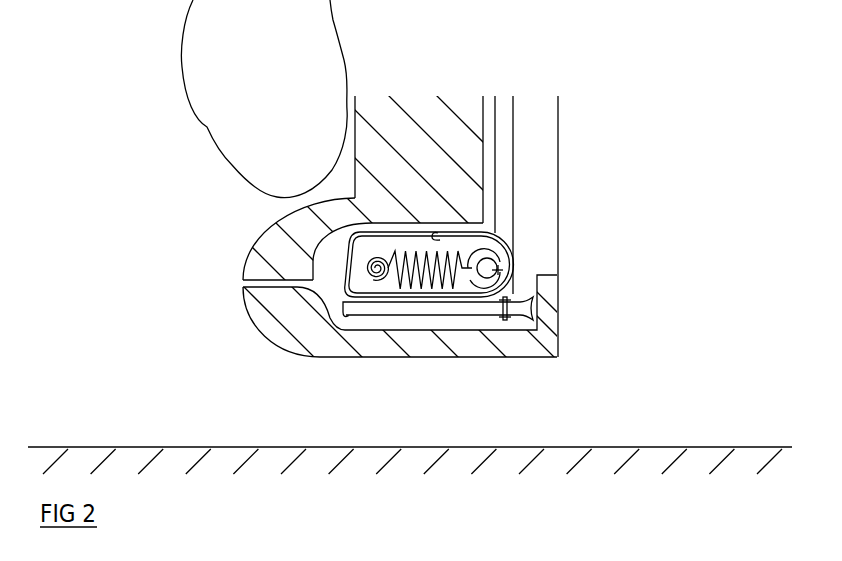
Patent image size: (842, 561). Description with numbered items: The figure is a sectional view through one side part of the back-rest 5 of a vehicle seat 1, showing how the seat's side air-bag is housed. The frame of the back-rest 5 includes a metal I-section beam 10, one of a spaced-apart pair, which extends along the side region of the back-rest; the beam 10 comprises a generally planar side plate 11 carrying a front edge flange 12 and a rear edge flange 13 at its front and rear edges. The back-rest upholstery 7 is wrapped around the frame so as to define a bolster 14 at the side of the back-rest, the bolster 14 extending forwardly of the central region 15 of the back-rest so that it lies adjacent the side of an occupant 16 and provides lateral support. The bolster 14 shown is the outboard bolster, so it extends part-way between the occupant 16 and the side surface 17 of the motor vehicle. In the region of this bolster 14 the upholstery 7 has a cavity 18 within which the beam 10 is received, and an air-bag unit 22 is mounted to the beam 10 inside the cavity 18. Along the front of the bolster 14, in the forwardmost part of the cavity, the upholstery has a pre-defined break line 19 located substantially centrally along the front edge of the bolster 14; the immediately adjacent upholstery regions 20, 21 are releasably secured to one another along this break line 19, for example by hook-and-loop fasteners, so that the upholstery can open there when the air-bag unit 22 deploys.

The vehicle seat 1 is at (600, 100).
The back-rest 5 is at (558, 183).
The back-rest upholstery 7 is at (513, 342).
The I-section beam 10 is at (423, 312).
The side plate 11 is at (451, 312).
The front edge flange 12 is at (345, 312).
The rear edge flange 13 is at (553, 325).
The bolster 14 is at (256, 228).
The central region of the back-rest 15 is at (408, 117).
The occupant 16 is at (264, 99).
The side surface of the motor vehicle 17 is at (603, 448).
The cavity 18 is at (323, 288).
The break line 19 is at (243, 285).
The upholstery region 20 is at (257, 267).
The upholstery region 21 is at (258, 309).
The air-bag unit 22 is at (512, 255).